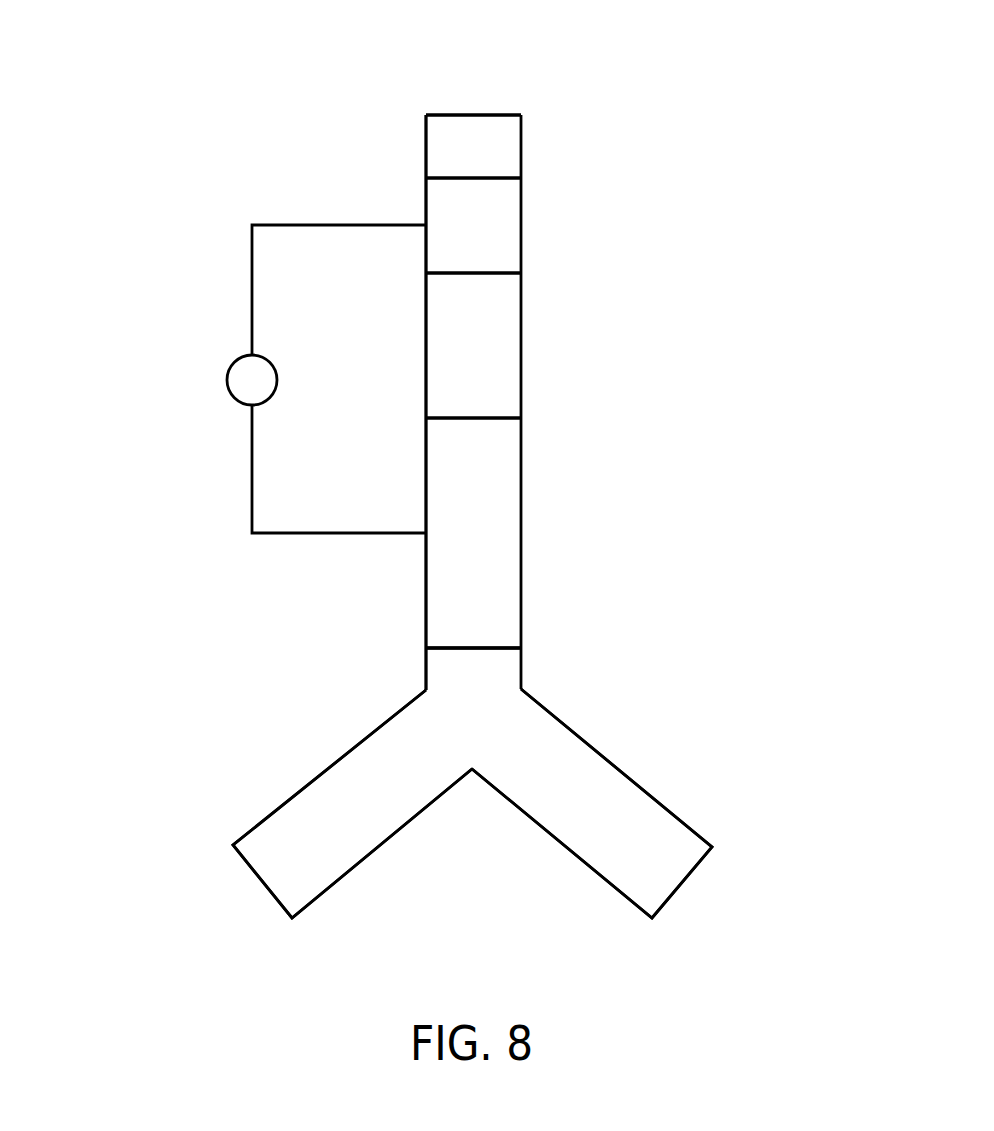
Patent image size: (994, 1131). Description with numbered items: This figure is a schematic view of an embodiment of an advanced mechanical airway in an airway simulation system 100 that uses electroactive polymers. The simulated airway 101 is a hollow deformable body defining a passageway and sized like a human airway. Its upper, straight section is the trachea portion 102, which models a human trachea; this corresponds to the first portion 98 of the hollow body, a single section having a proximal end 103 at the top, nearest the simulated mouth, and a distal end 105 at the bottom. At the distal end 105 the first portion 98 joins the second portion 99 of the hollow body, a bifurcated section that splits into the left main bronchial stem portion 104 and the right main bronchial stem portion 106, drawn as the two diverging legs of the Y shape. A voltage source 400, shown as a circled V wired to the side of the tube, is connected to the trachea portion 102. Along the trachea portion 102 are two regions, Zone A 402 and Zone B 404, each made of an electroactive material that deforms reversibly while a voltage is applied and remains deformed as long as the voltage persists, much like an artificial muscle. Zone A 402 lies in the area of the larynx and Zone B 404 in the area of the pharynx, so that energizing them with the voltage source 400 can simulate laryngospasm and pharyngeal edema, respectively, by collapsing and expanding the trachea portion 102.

The airway simulation system 100 is at (250, 95).
The first portion 98 is at (588, 383).
The second portion 99 is at (692, 768).
The simulated airway 101 is at (426, 148).
The trachea portion 102 is at (497, 343).
The proximal end 103 is at (521, 115).
The left main bronchial stem portion 104 is at (605, 783).
The distal end 105 is at (522, 688).
The right main bronchial stem portion 106 is at (343, 793).
The voltage source 400 is at (227, 380).
The Zone A 402 is at (530, 178).
The Zone B 404 is at (530, 418).